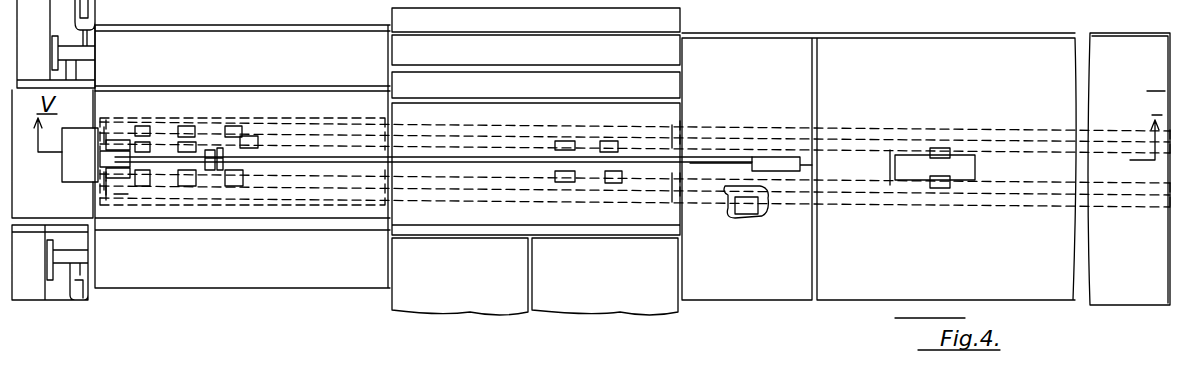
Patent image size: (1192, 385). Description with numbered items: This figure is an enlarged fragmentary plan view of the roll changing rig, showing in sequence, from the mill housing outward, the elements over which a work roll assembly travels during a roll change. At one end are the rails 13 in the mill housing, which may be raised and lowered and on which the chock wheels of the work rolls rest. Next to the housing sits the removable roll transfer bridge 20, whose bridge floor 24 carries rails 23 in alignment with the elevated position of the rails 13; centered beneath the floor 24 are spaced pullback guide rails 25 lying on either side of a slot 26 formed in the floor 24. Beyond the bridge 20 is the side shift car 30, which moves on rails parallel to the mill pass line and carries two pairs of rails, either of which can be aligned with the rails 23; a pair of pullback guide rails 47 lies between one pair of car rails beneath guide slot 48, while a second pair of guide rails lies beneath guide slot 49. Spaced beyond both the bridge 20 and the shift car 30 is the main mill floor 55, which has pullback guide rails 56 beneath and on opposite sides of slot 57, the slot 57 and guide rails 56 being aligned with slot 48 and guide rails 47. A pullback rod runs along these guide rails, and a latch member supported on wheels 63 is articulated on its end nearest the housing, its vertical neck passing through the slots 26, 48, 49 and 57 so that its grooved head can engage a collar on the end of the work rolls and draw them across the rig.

The rails 13 is at (32, 90).
The removable roll transfer bridge 20 is at (317, 226).
The rails 23 is at (210, 90).
The bridge floor 24 is at (178, 117).
The pullback guide rails 25 is at (265, 157).
The slot 26 is at (330, 157).
The side shift car 30 is at (607, 230).
The pullback guide rails 47 is at (612, 176).
The guide slot 48 is at (473, 162).
The guide slot 49 is at (490, 73).
The main mill floor 55 is at (1136, 73).
The pullback guide rails 56 is at (826, 165).
The slot 57 is at (732, 160).
The wheels 63 is at (128, 184).